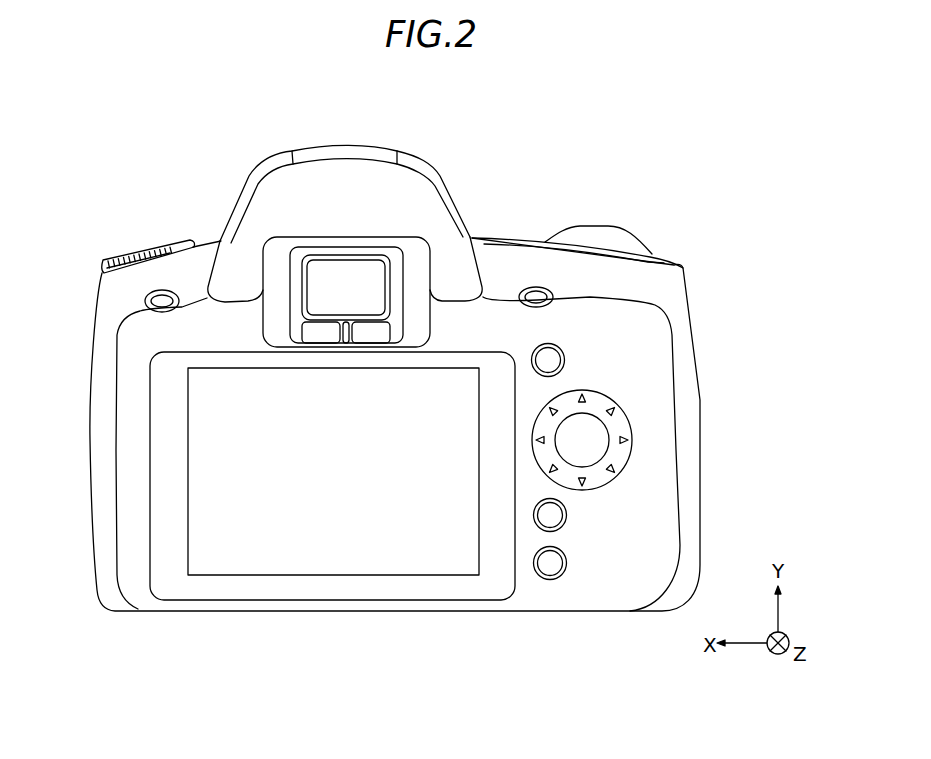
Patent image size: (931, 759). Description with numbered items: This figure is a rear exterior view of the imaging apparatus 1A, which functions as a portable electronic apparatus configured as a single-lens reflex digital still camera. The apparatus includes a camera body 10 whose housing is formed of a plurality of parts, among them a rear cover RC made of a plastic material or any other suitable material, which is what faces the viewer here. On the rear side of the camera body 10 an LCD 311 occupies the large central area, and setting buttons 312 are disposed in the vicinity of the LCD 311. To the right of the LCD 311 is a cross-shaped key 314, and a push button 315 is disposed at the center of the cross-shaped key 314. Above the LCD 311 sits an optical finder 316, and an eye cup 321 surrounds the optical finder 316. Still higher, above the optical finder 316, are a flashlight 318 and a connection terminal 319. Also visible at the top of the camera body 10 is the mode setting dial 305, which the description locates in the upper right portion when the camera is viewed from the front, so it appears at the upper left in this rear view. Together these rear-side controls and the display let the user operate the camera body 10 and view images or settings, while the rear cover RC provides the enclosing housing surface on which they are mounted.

The imaging apparatus 1A is at (150, 137).
The camera body 10 is at (105, 246).
The mode setting dial 305 is at (144, 254).
The LCD 311 is at (335, 555).
The setting buttons 312 is at (566, 357).
The cross-shaped key 314 is at (620, 428).
The push button 315 is at (588, 458).
The optical finder 316 is at (370, 272).
The flashlight 318 is at (264, 135).
The connection terminal 319 is at (355, 136).
The eye cup 321 is at (252, 217).
The rear cover RC is at (673, 251).